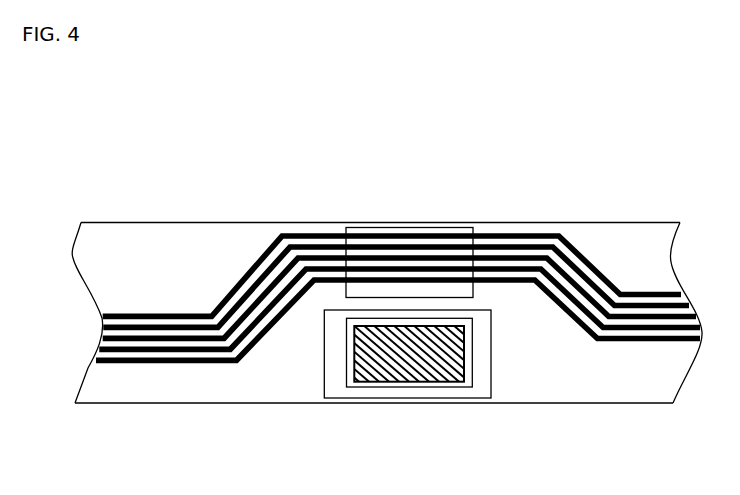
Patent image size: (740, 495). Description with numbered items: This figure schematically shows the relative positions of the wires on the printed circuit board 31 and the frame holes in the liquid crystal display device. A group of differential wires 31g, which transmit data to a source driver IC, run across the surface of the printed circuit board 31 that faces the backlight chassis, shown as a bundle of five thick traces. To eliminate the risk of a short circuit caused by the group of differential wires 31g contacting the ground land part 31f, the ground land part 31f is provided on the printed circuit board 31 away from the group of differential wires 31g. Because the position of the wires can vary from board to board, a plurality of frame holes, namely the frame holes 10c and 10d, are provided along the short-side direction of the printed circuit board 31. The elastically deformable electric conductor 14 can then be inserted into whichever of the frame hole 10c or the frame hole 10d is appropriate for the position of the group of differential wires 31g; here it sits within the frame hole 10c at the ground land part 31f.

The printed circuit board 31 is at (597, 222).
The group of differential wires 31g is at (83, 311).
The frame hole 10d is at (388, 222).
The ground land part 31f is at (351, 398).
The frame hole 10c is at (410, 387).
The electric conductor 14 is at (447, 382).